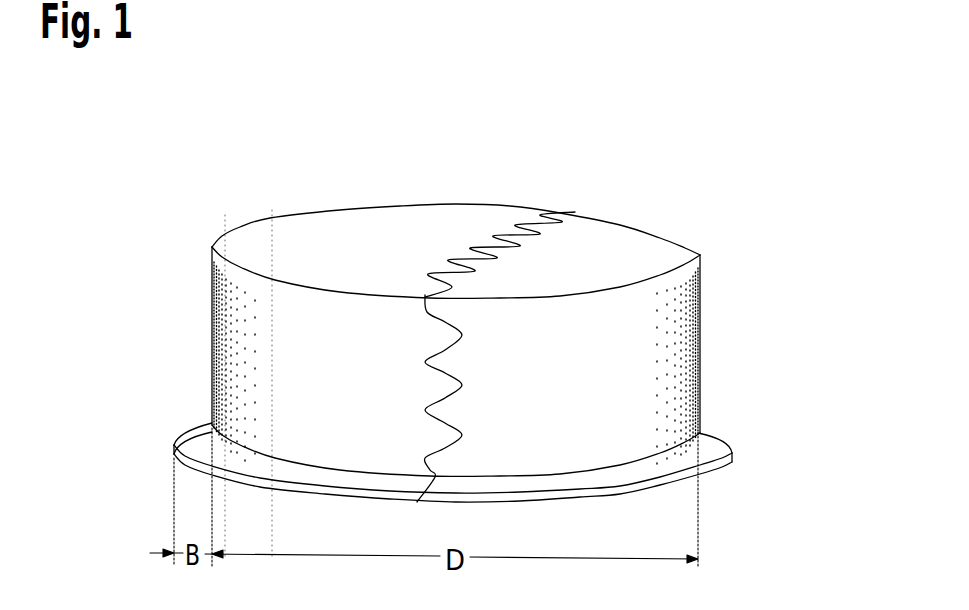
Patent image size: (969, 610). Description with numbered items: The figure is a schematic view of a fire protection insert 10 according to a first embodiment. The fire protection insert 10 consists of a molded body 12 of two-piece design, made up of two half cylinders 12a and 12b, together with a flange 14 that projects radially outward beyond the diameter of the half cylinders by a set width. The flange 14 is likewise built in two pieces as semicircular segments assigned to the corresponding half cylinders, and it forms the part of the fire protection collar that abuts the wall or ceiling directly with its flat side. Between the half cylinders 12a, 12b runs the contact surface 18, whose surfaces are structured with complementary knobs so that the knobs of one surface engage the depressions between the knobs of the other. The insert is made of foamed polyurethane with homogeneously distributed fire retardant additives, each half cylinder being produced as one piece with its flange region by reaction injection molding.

The fire protection insert 10 is at (266, 148).
The molded body 12 is at (701, 318).
The half cylinder 12a is at (245, 236).
The half cylinder 12b is at (650, 244).
The flange 14 is at (733, 453).
The contact surface 18 is at (546, 229).